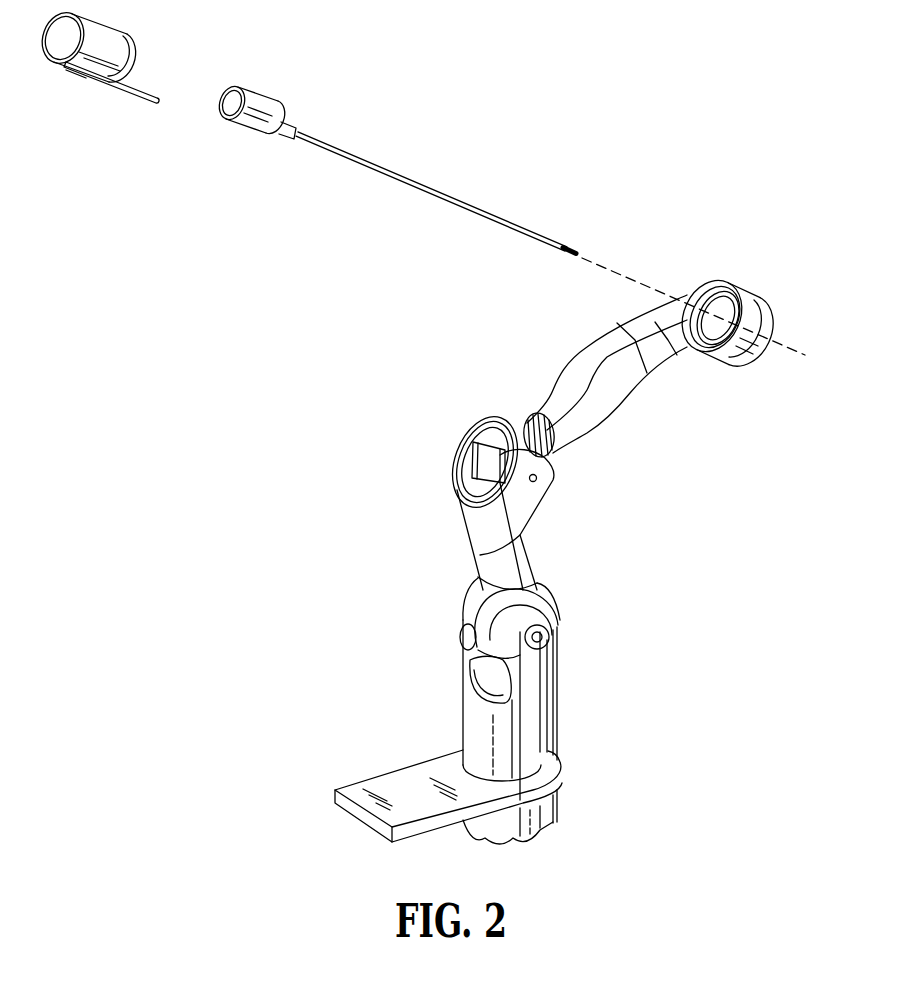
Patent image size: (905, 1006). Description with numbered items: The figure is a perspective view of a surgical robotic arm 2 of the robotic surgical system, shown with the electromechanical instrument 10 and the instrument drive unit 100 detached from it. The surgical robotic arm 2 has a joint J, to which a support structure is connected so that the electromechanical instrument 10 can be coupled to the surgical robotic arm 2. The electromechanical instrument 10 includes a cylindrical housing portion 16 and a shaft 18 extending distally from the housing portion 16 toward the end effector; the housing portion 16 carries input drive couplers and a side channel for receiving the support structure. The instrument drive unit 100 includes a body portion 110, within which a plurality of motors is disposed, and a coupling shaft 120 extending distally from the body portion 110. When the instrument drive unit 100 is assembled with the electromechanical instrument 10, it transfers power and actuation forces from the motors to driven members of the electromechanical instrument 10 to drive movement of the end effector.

The surgical robotic arm 2 is at (456, 481).
The electromechanical instrument 10 is at (510, 204).
The housing portion 16 is at (260, 90).
The shaft 18 is at (398, 182).
The instrument drive unit 100 is at (97, 23).
The body portion 110 is at (83, 80).
The coupling shaft 120 is at (133, 107).
The joint J is at (762, 305).